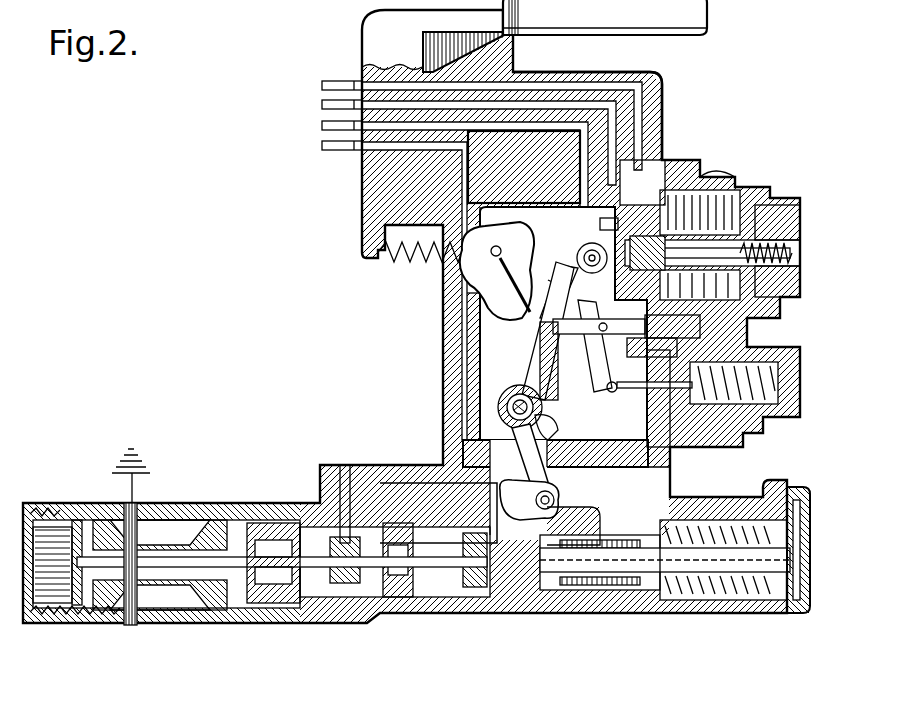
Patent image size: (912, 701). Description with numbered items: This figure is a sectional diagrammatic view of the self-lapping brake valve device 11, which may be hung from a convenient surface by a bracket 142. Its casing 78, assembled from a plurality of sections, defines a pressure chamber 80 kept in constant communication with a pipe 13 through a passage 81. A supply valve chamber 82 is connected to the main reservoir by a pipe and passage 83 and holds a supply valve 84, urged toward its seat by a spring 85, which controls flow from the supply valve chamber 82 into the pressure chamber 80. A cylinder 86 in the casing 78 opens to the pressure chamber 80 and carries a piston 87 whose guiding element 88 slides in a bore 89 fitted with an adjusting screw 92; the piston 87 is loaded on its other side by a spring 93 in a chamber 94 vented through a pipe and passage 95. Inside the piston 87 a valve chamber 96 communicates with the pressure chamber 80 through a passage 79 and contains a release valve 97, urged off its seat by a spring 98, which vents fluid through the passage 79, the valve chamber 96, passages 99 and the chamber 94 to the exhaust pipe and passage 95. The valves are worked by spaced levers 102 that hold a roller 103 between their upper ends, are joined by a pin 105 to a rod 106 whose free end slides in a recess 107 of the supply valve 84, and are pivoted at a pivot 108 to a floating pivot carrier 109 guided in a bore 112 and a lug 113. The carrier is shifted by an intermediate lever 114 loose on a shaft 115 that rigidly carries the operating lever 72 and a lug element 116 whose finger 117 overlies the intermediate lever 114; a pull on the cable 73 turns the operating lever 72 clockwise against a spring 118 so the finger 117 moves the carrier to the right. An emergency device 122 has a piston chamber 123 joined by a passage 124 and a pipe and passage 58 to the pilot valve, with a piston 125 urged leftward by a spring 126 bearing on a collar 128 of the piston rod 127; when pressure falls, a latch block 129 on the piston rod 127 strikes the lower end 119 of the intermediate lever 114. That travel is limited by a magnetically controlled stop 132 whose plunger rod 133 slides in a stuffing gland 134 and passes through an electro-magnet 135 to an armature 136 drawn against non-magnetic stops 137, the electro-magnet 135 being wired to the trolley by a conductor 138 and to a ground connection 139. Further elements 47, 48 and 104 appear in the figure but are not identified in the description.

The brake valve device 11 is at (362, 203).
The pipe 13 is at (322, 126).
The section line 47 is at (538, 696).
The section line 48 is at (683, 696).
The pipe and passage 58 is at (322, 146).
The operating lever 72 is at (497, 271).
The cable 73 is at (485, 498).
The casing 78 is at (663, 86).
The passage 79 is at (572, 292).
The pressure chamber 80 is at (557, 323).
The passage 81 is at (527, 125).
The supply valve chamber 82 is at (703, 353).
The pipe and passage 83 is at (322, 86).
The supply valve 84 is at (777, 358).
The spring 85 is at (777, 380).
The cylinder 86 is at (617, 223).
The piston 87 is at (663, 207).
The guiding element 88 is at (785, 217).
The bore 89 is at (760, 243).
The adjusting screw 92 is at (800, 254).
The spring 93 is at (787, 276).
The chamber 94 is at (703, 227).
The pipe and passage 95 is at (322, 105).
The valve chamber 96 is at (710, 193).
The release valve 97 is at (703, 180).
The spring 98 is at (632, 213).
The passages 99 is at (763, 213).
The levers 102 is at (700, 265).
The roller 103 is at (578, 257).
The roller 104 is at (589, 246).
The pin 105 is at (574, 369).
The rod 106 is at (647, 403).
The recess 107 is at (650, 420).
The pivot 108 is at (586, 346).
The floating pivot carrier 109 is at (550, 331).
The bore 112 is at (650, 345).
The lug 113 is at (548, 270).
The intermediate lever 114 is at (555, 482).
The shaft 115 is at (498, 409).
The lug element 116 is at (607, 387).
The finger 117 is at (556, 426).
The spring 118 is at (380, 262).
The lower end 119 is at (565, 505).
The emergency device 122 is at (527, 614).
The piston chamber 123 is at (313, 613).
The passage 124 is at (362, 482).
The piston 125 is at (402, 613).
The spring 126 is at (703, 598).
The piston rod 127 is at (592, 613).
The collar 128 is at (660, 600).
The latch block 129 is at (575, 516).
The magnetically controlled stop 132 is at (372, 613).
The plunger rod 133 is at (215, 612).
The stuffing gland 134 is at (258, 605).
The electro-magnet 135 is at (155, 615).
The armature 136 is at (70, 576).
The non-magnetic stops 137 is at (90, 518).
The conductor 138 is at (128, 627).
The ground connection 139 is at (134, 483).
The bracket 142 is at (690, 18).